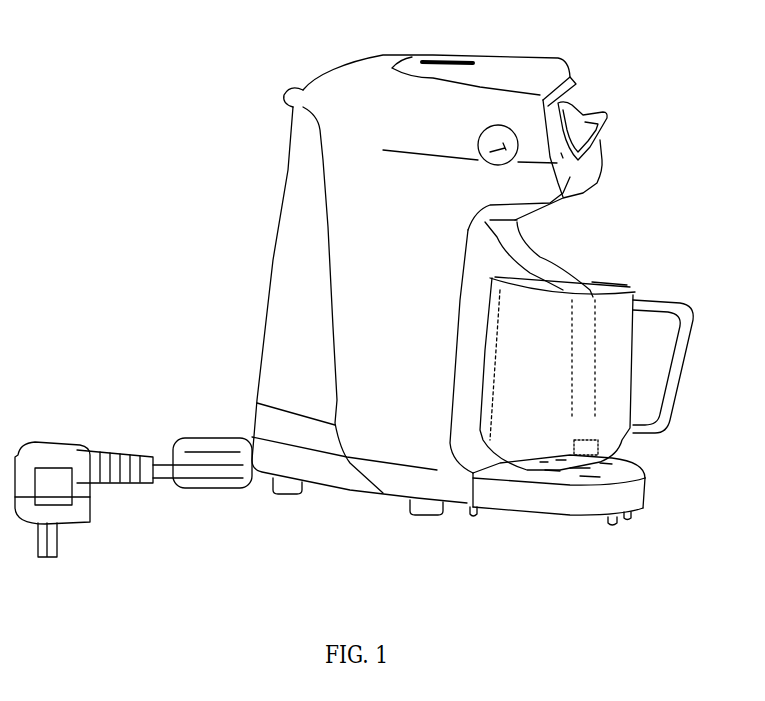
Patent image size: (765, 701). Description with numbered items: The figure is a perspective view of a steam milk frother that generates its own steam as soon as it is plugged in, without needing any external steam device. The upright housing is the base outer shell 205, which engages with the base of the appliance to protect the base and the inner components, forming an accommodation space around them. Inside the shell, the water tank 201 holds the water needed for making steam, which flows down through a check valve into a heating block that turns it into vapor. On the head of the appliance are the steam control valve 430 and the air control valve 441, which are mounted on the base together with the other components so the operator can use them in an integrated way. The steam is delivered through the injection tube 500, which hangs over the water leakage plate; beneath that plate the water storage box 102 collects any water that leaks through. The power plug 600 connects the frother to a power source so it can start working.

The water storage box 102 is at (563, 490).
The water tank 201 is at (312, 290).
The base outer shell 205 is at (360, 126).
The steam control valve 430 is at (488, 137).
The air control valve 441 is at (585, 113).
The injection tube 500 is at (568, 260).
The power plug 600 is at (70, 473).